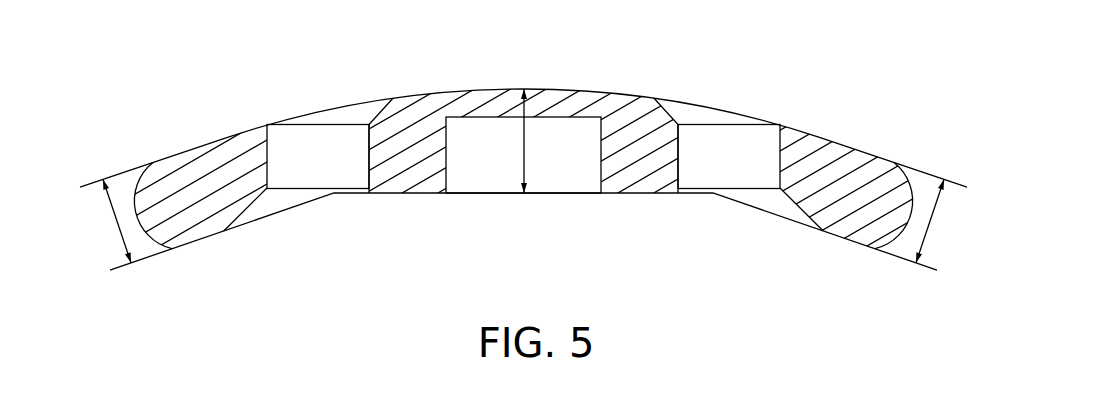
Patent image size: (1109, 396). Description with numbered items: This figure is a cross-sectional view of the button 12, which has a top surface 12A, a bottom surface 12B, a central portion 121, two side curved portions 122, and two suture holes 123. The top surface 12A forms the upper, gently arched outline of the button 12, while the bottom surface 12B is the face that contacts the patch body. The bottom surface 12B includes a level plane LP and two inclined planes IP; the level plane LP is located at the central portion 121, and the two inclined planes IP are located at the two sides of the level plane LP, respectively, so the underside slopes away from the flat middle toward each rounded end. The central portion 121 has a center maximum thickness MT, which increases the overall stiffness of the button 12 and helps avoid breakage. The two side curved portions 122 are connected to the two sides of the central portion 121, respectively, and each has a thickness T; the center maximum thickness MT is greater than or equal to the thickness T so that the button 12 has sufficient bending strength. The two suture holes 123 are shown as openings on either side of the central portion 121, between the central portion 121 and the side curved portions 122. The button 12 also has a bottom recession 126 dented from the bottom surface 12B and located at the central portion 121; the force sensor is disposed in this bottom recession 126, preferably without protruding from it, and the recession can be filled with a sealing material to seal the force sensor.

The button 12 is at (523, 191).
The top surface 12A is at (567, 90).
The bottom surface 12B is at (627, 197).
The central portion 121 is at (485, 104).
The side curved portion 122 is at (250, 152).
The suture hole 123 is at (330, 135).
The bottom recession 126 is at (486, 183).
The center maximum thickness MT is at (527, 145).
The thickness of the side curved portion T is at (115, 221).
The inclined plane IP is at (302, 212).
The level plane LP is at (428, 196).